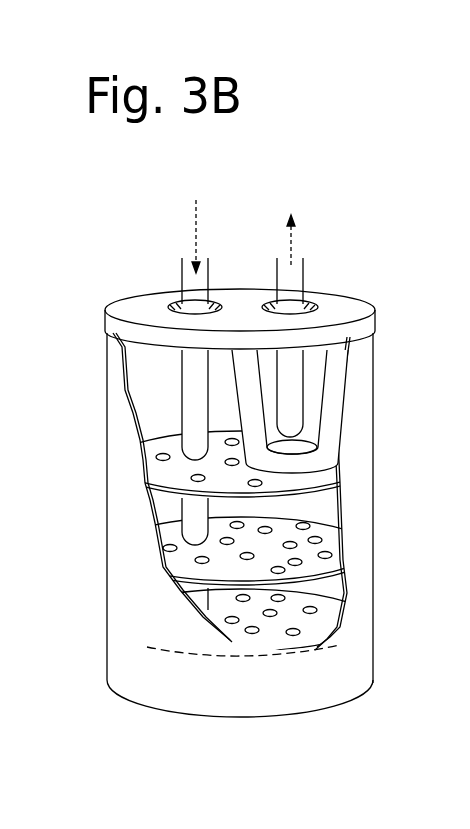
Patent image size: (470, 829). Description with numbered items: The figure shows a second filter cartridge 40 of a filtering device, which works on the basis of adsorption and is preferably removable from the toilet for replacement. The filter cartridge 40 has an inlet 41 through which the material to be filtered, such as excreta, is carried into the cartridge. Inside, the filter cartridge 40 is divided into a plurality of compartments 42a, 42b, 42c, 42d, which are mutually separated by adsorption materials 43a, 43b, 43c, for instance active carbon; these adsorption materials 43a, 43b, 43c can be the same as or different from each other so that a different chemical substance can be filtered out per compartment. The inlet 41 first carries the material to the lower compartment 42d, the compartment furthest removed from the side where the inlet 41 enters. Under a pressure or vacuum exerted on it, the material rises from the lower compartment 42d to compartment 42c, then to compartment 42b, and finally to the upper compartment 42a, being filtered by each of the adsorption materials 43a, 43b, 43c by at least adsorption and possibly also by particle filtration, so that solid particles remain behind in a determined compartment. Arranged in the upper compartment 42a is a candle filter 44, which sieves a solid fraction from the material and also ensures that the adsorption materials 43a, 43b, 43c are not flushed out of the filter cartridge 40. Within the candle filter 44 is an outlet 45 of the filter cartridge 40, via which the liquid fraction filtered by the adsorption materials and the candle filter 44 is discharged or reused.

The filter cartridge 40 is at (368, 283).
The inlet 41 is at (180, 286).
The upper compartment 42a is at (168, 411).
The compartment 42b is at (168, 506).
The compartment 42c is at (216, 606).
The lower compartment 42d is at (193, 681).
The adsorption material 43a is at (323, 480).
The adsorption material 43b is at (333, 556).
The adsorption material 43c is at (330, 608).
The candle filter 44 is at (322, 409).
The outlet 45 is at (305, 282).